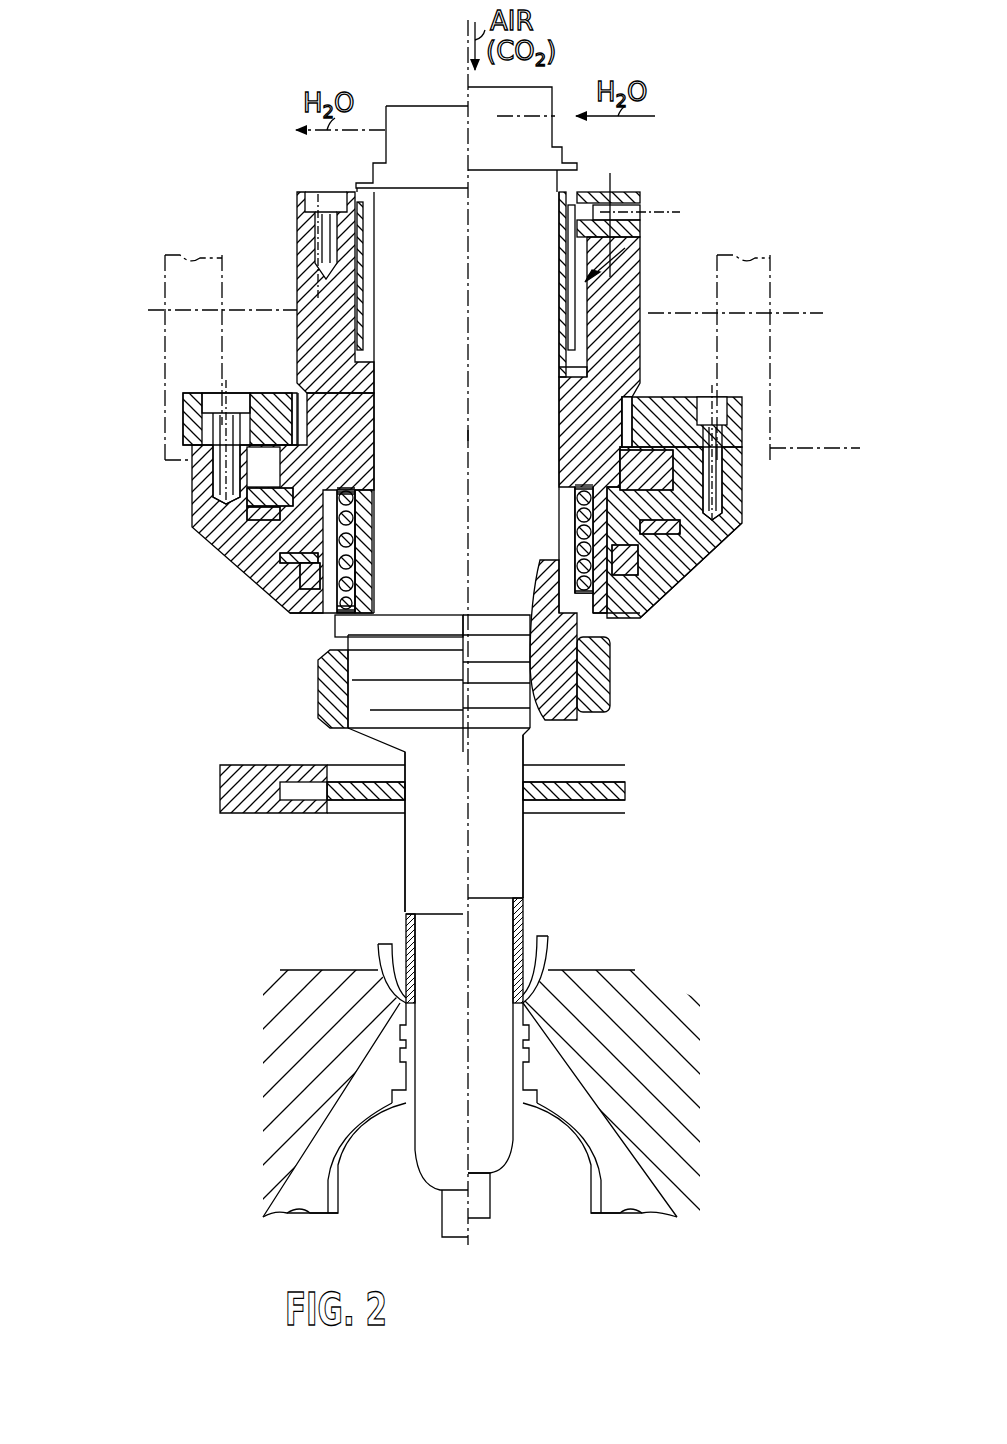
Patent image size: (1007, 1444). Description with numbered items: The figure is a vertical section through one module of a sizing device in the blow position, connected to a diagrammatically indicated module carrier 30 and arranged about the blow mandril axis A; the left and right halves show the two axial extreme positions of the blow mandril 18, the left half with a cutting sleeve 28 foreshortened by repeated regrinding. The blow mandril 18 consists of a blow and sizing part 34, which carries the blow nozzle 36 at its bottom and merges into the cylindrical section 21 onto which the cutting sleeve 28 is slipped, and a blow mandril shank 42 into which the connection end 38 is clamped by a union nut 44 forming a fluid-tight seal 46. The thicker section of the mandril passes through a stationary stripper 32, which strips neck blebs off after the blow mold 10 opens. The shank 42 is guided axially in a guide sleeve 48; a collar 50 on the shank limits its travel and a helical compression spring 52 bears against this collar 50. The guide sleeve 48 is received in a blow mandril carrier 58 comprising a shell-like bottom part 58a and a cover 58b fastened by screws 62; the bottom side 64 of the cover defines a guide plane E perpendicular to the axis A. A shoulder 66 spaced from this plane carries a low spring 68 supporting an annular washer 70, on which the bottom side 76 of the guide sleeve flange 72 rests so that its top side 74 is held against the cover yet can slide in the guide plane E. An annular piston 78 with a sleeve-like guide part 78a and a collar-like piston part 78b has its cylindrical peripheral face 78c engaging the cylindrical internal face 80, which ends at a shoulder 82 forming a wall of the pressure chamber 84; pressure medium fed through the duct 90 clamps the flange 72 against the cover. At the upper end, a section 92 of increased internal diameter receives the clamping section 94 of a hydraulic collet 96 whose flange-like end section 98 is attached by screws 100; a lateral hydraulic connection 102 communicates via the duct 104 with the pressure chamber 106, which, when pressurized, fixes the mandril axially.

The blow mold 10 is at (600, 975).
The blow mandril 18 is at (392, 848).
The cylindrical section 21 is at (430, 940).
The cutting sleeve 28 is at (523, 913).
The module carrier 30 is at (178, 347).
The stripper 32 is at (625, 790).
The blow and sizing part 34 is at (515, 856).
The blow nozzle 36 is at (478, 1207).
The connection end 38 is at (610, 700).
The blow mandril shank 42 is at (385, 322).
The union nut 44 is at (330, 722).
The seal 46 is at (600, 655).
The guide sleeve 48 is at (618, 368).
The collar 50 is at (598, 628).
The helical compression spring 52 is at (577, 525).
The blow mandril carrier 58 is at (262, 568).
The bottom part 58a is at (690, 522).
The cover 58b is at (270, 393).
The screws 62 is at (205, 402).
The bottom side 64 is at (270, 478).
The shoulder 66 is at (640, 482).
The spring 68 is at (262, 508).
The annular washer 70 is at (655, 578).
The flange 72 is at (742, 453).
The top side 74 is at (673, 397).
The bottom side 76 is at (352, 498).
The annular piston 78 is at (345, 540).
The guide part 78a is at (352, 600).
The piston part 78b is at (335, 590).
The cylindrical peripheral face 78c is at (300, 565).
The cylindrical internal face 80 is at (640, 537).
The shoulder 82 is at (650, 565).
The pressure chamber 84 is at (320, 585).
The duct 90 is at (725, 548).
The section 92 is at (556, 362).
The clamping section 94 is at (568, 300).
The hydraulic collet 96 is at (640, 252).
The flange-like end section 98 is at (640, 192).
The screws 100 is at (318, 198).
The lateral hydraulic connection 102 is at (630, 210).
The duct 104 is at (590, 207).
The pressure chamber 106 is at (360, 250).
The blow mandril axis A is at (452, 418).
The guide plane E is at (836, 448).